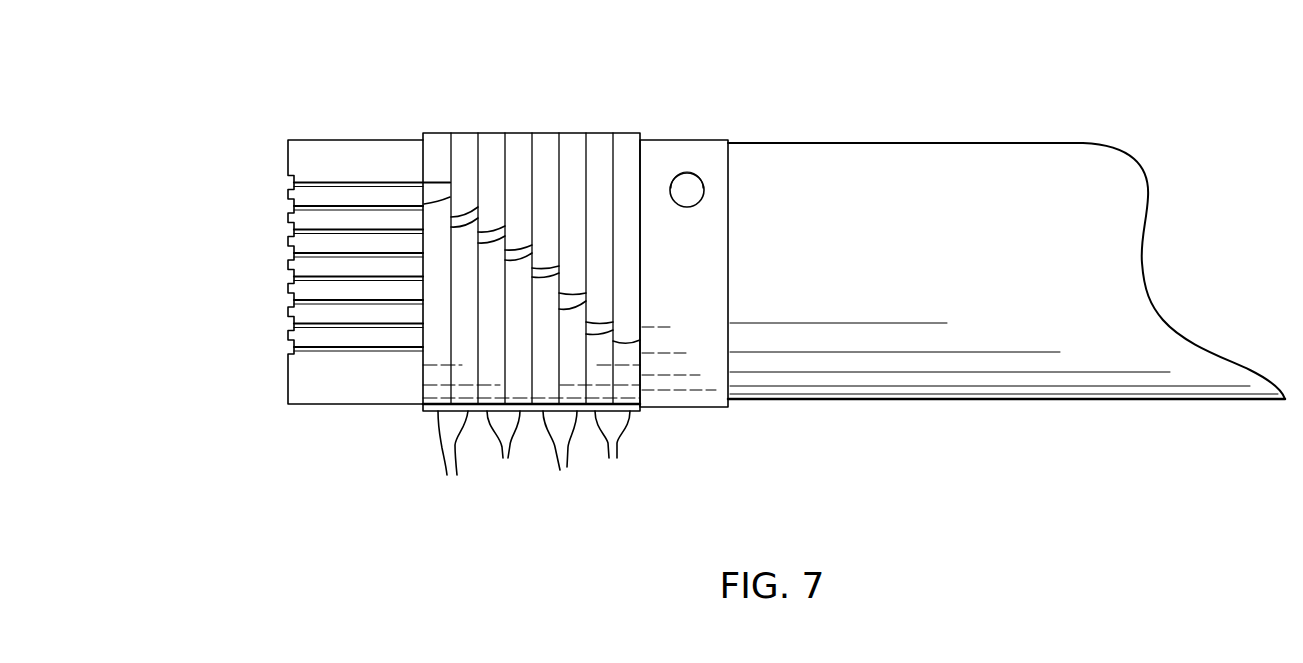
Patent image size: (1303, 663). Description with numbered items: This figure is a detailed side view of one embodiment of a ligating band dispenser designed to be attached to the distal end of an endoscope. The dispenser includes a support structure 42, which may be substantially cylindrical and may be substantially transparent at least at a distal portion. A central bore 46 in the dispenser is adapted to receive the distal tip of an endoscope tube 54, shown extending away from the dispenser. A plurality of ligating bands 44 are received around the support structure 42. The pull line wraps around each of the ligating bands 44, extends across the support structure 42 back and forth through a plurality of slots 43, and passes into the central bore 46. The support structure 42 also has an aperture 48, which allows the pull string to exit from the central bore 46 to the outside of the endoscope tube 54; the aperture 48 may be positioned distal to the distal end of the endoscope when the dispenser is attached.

The support structure 42 is at (362, 140).
The slots 43 is at (294, 253).
The ligating bands 44 is at (534, 459).
The central bore 46 is at (185, 283).
The aperture 48 is at (690, 185).
The endoscope tube 54 is at (913, 400).